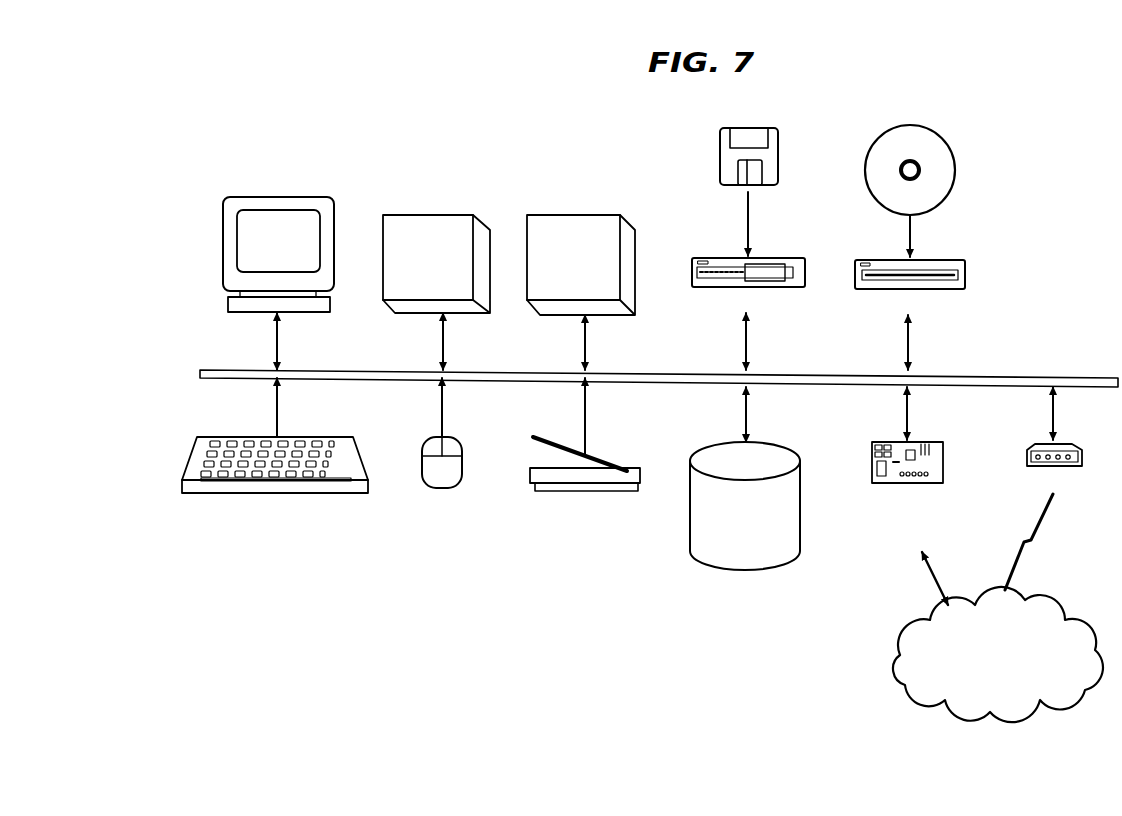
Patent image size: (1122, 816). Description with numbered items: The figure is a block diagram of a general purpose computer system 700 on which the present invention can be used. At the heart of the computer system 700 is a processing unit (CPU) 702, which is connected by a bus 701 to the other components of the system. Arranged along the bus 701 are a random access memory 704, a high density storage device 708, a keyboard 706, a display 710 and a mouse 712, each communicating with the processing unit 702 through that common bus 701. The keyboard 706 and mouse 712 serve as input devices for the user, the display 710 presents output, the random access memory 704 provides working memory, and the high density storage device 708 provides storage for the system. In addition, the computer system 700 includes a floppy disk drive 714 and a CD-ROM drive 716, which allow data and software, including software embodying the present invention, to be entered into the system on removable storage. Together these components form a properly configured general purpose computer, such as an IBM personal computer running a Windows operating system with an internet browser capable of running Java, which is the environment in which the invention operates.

The computer system 700 is at (493, 119).
The bus 701 is at (1073, 377).
The processing unit (CPU) 702 is at (428, 215).
The random access memory 704 is at (580, 215).
The keyboard 706 is at (186, 452).
The high density storage device 708 is at (690, 475).
The display 710 is at (265, 197).
The mouse 712 is at (422, 458).
The floppy disk drive 714 is at (768, 256).
The CD-ROM drive 716 is at (965, 267).